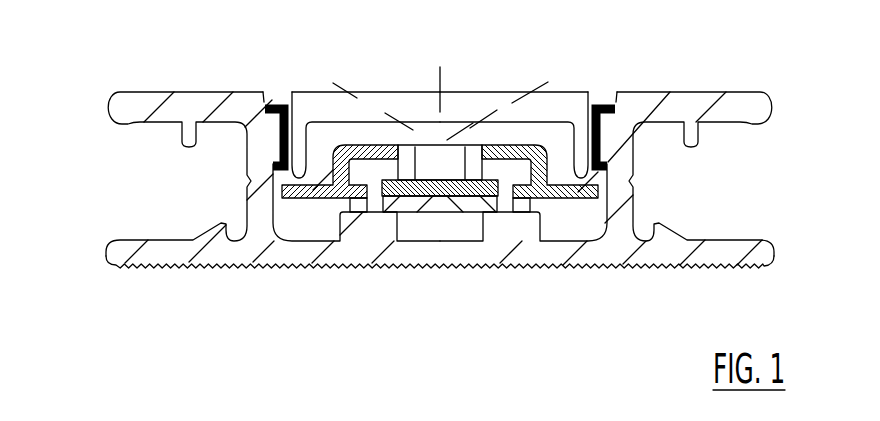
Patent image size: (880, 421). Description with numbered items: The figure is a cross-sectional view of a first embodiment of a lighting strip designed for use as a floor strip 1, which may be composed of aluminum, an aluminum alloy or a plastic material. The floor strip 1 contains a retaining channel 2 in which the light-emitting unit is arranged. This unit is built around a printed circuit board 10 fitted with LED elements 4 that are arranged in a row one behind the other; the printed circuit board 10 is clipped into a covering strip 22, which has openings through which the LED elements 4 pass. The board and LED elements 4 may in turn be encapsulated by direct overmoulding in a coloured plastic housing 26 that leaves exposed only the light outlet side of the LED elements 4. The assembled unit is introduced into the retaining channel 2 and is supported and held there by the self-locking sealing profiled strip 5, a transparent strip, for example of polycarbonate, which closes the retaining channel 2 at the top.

The floor strip 1 is at (440, 194).
The retaining channel 2 is at (307, 217).
The LED elements 4 is at (456, 170).
The sealing profiled strip 5 is at (578, 100).
The printed circuit board 10 is at (368, 213).
The covering strip 22 is at (340, 147).
The plastic housing 26 is at (497, 200).